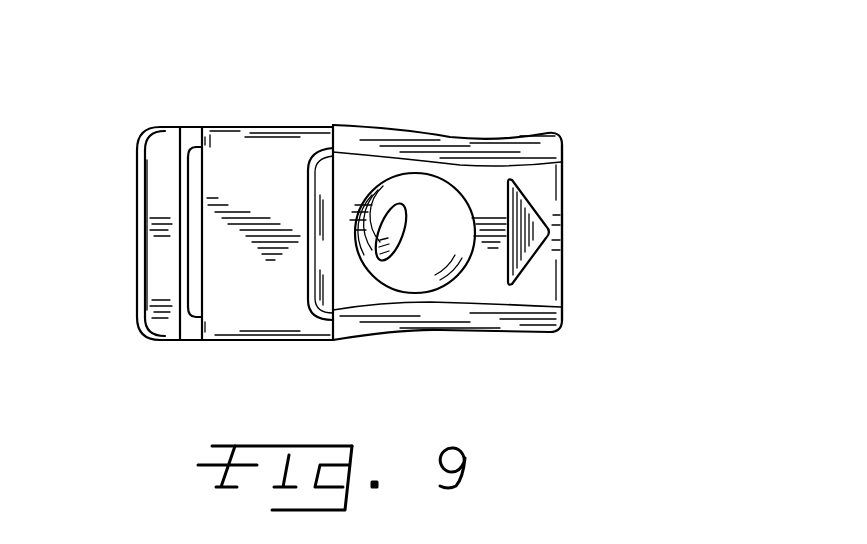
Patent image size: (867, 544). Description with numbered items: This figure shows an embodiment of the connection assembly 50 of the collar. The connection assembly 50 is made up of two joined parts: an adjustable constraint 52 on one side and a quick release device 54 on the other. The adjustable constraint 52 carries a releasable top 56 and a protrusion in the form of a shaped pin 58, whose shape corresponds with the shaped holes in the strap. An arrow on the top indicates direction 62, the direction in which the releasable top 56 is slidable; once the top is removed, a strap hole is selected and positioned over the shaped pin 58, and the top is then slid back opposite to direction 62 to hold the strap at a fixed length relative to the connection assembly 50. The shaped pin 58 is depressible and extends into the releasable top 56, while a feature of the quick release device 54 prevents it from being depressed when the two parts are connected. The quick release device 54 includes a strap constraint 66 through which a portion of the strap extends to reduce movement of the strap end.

The connection assembly 50 is at (372, 205).
The adjustable constraint 52 is at (513, 212).
The quick release device 54 is at (192, 197).
The releasable top 56 is at (562, 180).
The shaped pin 58 is at (398, 240).
The direction 62 is at (672, 223).
The strap constraint 66 is at (147, 215).